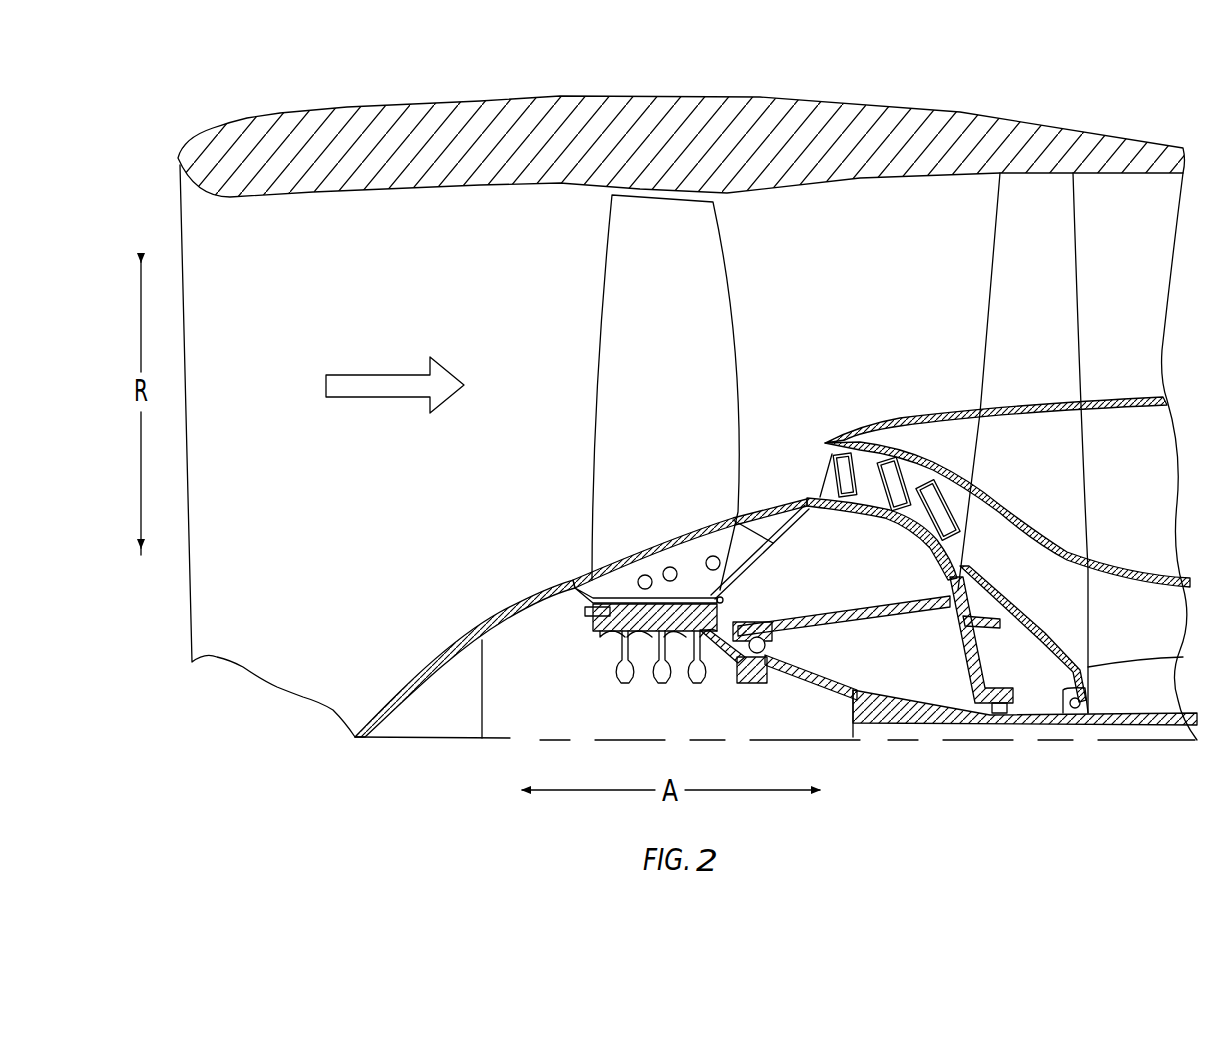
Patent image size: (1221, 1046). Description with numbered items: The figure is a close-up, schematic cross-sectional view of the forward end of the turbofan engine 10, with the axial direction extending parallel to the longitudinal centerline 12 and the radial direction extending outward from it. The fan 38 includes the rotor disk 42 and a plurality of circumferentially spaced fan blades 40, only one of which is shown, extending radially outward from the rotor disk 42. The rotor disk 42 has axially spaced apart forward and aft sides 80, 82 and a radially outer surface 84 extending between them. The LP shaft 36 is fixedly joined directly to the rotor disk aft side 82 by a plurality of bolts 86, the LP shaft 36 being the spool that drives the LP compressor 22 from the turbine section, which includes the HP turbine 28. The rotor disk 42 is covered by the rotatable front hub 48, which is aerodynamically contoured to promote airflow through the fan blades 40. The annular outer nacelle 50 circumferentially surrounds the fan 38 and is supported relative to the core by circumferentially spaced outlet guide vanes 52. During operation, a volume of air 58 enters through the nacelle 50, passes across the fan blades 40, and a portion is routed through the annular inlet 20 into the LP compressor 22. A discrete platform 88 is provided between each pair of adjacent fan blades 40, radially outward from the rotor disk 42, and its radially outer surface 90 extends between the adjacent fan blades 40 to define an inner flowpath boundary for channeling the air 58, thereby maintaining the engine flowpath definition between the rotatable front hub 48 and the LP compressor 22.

The turbofan engine 10 is at (249, 97).
The longitudinal centerline 12 is at (572, 366).
The annular inlet 20 is at (821, 451).
The low pressure compressor 22 is at (934, 452).
The high pressure turbine 28 is at (803, 523).
The low pressure shaft 36 is at (900, 690).
The fan 38 is at (419, 502).
The fan blades 40 is at (735, 320).
The rotor disk 42 is at (615, 634).
The rotatable front hub 48 is at (415, 678).
The outer nacelle 50 is at (758, 97).
The outlet guide vanes 52 is at (1073, 275).
The volume of air 58 is at (353, 398).
The forward side of rotor disk 80 is at (593, 618).
The aft side of rotor disk 82 is at (713, 618).
The radially outer surface of rotor disk 84 is at (703, 663).
The bolts 86 is at (730, 593).
The platform 88 is at (648, 543).
The radially outer surface of platform 90 is at (618, 557).